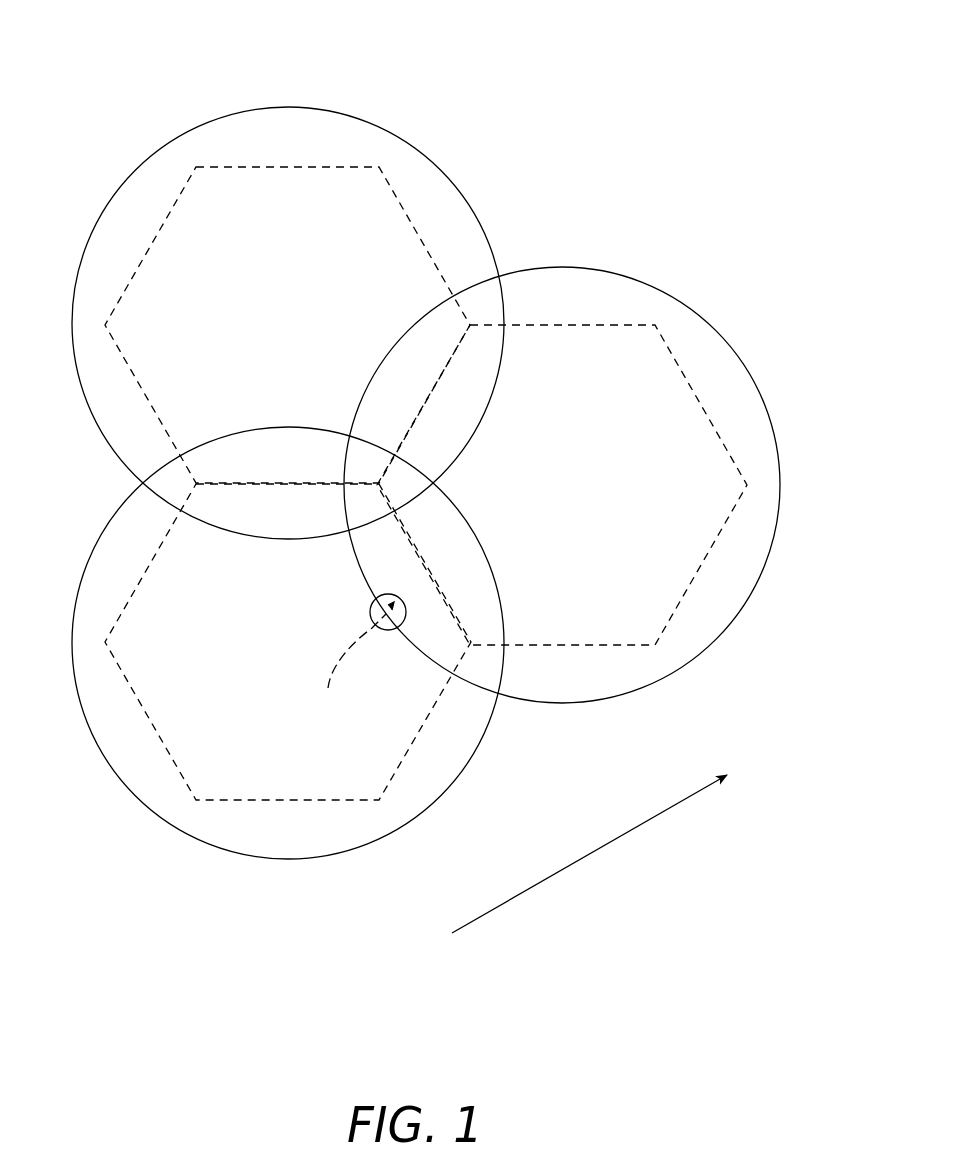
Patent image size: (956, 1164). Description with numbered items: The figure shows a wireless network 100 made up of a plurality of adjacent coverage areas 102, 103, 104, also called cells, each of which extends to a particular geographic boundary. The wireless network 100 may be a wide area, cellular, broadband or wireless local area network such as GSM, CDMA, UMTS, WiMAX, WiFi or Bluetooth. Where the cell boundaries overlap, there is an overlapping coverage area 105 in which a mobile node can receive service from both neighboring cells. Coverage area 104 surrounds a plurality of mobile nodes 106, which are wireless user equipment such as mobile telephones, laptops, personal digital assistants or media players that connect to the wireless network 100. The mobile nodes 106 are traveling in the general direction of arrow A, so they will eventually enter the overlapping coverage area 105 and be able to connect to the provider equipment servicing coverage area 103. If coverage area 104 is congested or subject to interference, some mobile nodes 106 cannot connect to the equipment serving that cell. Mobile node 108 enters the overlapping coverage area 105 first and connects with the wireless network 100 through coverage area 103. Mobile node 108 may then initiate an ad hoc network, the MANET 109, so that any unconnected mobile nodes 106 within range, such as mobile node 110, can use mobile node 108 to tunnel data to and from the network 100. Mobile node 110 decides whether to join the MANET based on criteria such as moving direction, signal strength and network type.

The wireless network 100 is at (717, 51).
The coverage area 102 is at (300, 108).
The coverage area 103 is at (780, 487).
The coverage area 104 is at (290, 859).
The overlapping coverage area 105 is at (475, 571).
The mobile node 106 is at (292, 645).
The mobile node 108 is at (406, 616).
The Mobile ad hoc Network (MANET) 109 is at (388, 595).
The mobile node 110 is at (380, 628).
The arrow A is at (590, 853).